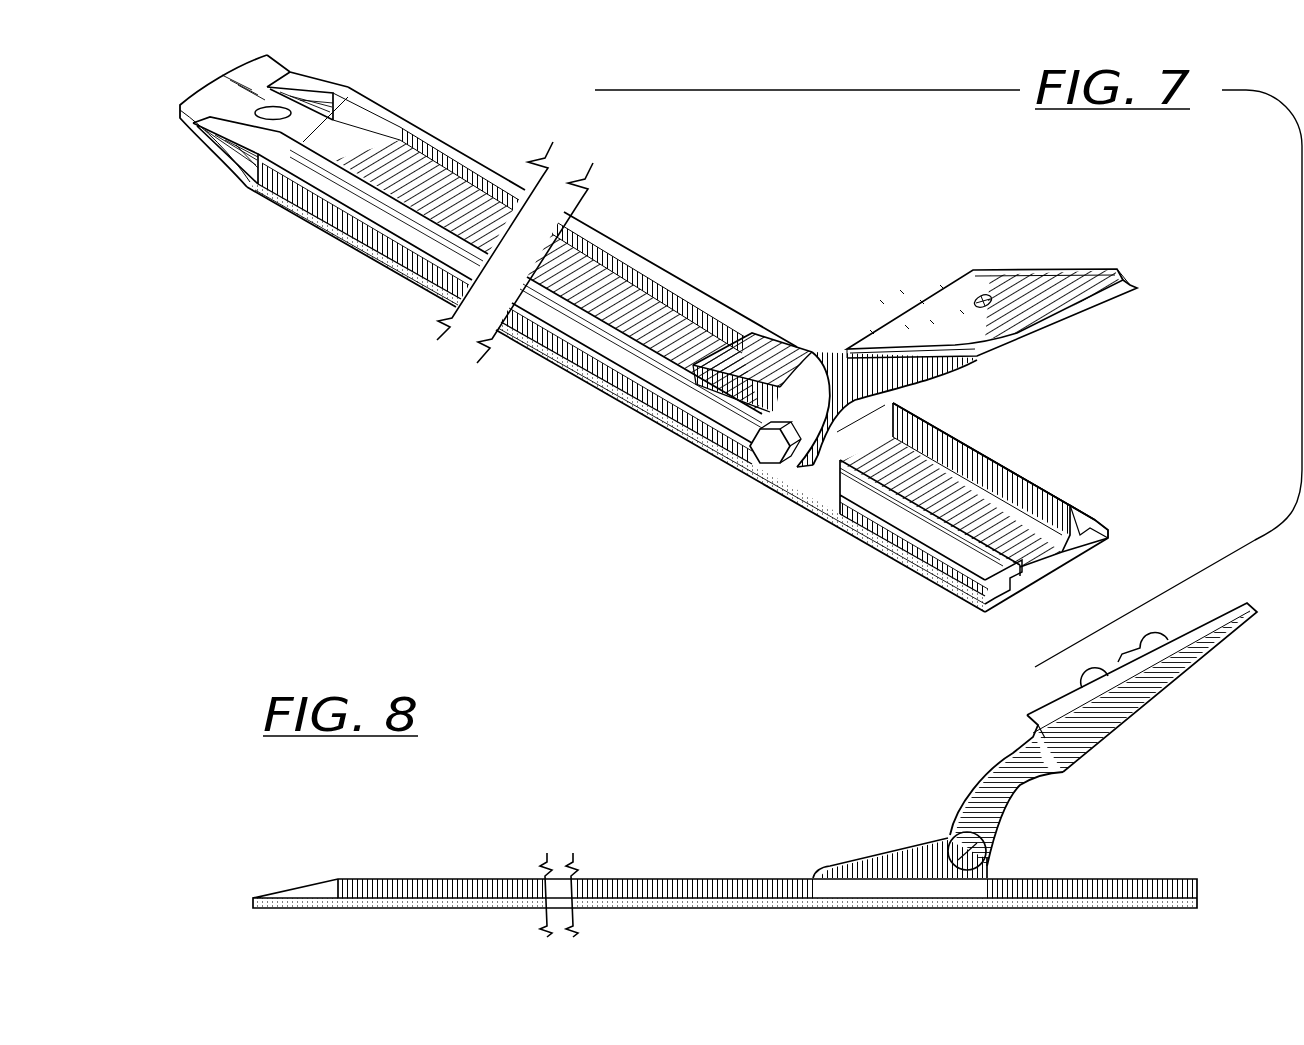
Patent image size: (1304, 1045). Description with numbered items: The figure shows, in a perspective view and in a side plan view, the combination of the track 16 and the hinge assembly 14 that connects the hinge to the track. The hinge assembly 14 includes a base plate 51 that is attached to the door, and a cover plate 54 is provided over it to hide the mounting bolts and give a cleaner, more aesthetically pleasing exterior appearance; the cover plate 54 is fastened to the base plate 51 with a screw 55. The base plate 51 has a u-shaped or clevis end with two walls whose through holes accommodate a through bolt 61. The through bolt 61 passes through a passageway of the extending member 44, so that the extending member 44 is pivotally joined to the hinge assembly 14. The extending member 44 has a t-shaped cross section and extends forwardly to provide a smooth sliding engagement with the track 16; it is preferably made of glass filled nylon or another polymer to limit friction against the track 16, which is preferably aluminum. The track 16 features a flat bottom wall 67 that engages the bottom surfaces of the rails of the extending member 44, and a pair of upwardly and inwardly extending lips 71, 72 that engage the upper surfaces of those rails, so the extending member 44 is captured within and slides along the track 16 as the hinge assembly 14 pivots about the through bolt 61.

In FIG. 7, the hinge assembly 14 is at (797, 313).
In FIG. 7, the track 16 is at (435, 130).
In FIG. 8, the track 16 is at (413, 876).
In FIG. 8, the extending member 44 is at (881, 856).
In FIG. 7, the base plate 51 is at (840, 390).
In FIG. 8, the base plate 51 is at (1018, 770).
In FIG. 7, the cover plate 54 is at (935, 325).
In FIG. 8, the cover plate 54 is at (1227, 677).
In FIG. 8, the screw 55 is at (1168, 667).
In FIG. 7, the through bolt 61 is at (763, 453).
In FIG. 8, the through bolt 61 is at (985, 836).
In FIG. 7, the flat bottom wall 67 is at (1052, 553).
In FIG. 7, the lip 71 is at (1064, 500).
In FIG. 7, the lip 72 is at (975, 543).